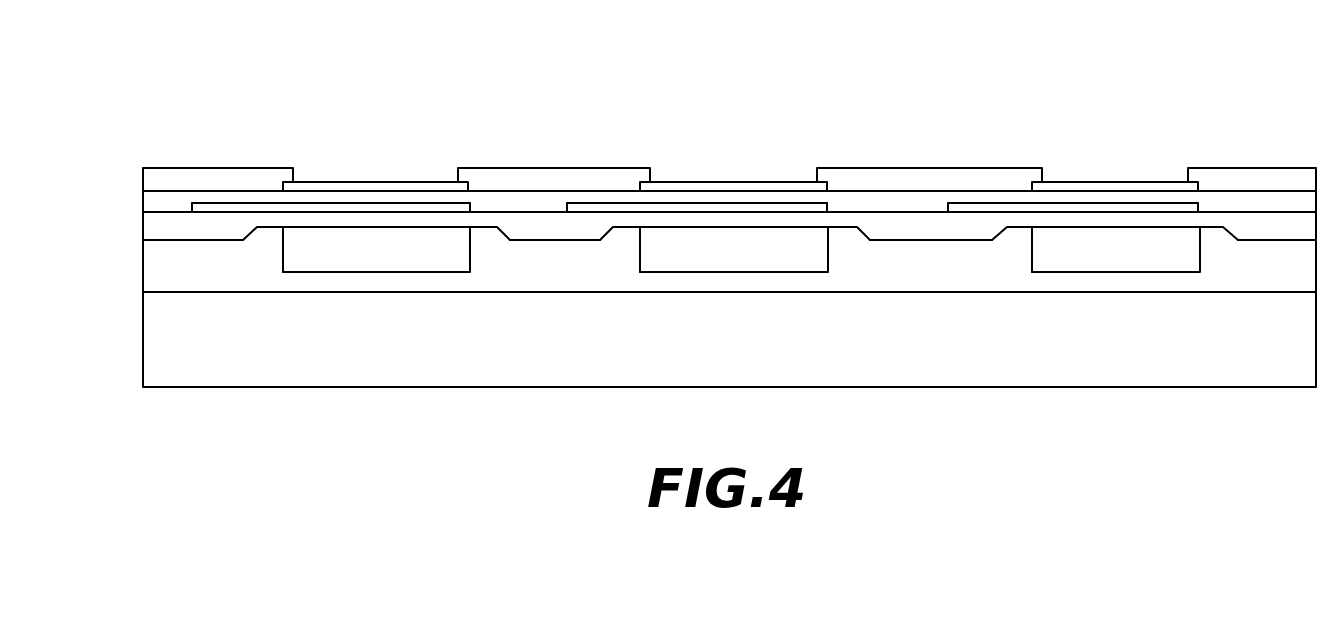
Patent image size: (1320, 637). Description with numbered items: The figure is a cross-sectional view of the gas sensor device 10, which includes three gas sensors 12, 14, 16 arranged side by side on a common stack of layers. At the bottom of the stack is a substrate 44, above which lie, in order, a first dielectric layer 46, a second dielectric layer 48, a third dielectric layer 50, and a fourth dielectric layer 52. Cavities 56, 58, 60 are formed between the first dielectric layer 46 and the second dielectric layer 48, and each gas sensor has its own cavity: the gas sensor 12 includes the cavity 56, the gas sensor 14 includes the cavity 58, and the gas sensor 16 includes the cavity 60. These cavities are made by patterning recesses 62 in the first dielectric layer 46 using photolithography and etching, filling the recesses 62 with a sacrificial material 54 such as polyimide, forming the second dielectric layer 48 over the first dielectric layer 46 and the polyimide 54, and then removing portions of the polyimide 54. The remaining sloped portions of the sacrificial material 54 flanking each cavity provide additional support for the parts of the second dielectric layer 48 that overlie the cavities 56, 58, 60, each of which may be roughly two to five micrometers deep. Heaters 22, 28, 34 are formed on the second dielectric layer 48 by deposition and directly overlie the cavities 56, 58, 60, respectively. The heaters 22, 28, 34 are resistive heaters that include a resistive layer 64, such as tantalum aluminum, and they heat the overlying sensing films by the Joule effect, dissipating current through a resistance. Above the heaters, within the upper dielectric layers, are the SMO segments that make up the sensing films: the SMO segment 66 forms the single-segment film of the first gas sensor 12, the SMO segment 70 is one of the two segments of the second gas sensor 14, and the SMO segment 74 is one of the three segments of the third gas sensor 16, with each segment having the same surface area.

The gas sensor device 10 is at (913, 75).
The gas sensor 12 is at (413, 113).
The gas sensor 14 is at (773, 113).
The gas sensor 16 is at (1143, 113).
The heater 22 is at (243, 203).
The heater 28 is at (600, 203).
The heater 34 is at (973, 203).
The substrate 44 is at (143, 342).
The first dielectric layer 46 is at (143, 266).
The second dielectric layer 48 is at (143, 228).
The third dielectric layer 50 is at (143, 201).
The fourth dielectric layer 52 is at (143, 177).
The sacrificial material 54 is at (262, 236).
The cavity 56 is at (390, 257).
The cavity 58 is at (753, 257).
The cavity 60 is at (1130, 257).
The recess 62 is at (277, 260).
The resistive layer 64 is at (333, 208).
The SMO segment 66 is at (412, 181).
The SMO segment 70 is at (770, 181).
The SMO segment 74 is at (1140, 181).